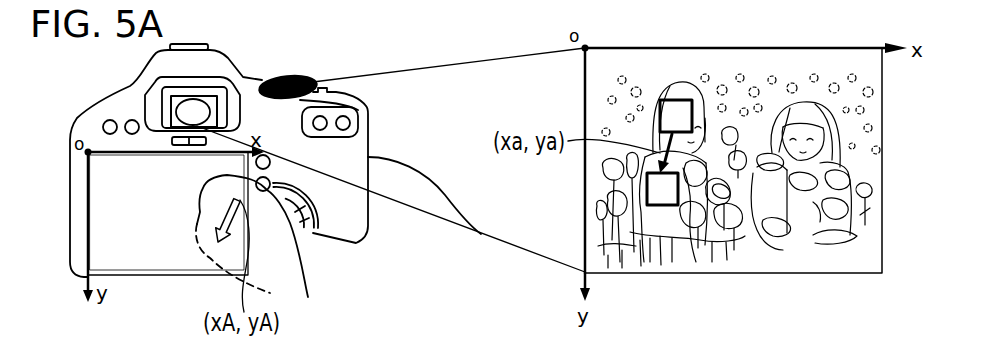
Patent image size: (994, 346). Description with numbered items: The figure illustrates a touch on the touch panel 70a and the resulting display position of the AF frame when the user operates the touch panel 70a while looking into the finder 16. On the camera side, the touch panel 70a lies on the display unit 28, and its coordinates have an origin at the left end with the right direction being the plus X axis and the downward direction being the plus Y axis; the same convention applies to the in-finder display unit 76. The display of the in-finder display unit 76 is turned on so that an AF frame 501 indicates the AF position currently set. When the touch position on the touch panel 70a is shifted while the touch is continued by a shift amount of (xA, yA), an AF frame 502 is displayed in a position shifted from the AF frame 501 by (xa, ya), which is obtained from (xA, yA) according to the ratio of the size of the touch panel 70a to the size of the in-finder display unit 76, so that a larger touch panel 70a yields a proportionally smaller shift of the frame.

The finder 16 is at (193, 110).
The display unit 28 is at (145, 168).
The touch panel 70a is at (97, 150).
The in-finder display unit 76 is at (772, 44).
The AF frame 501 is at (679, 98).
The AF frame 502 is at (666, 228).